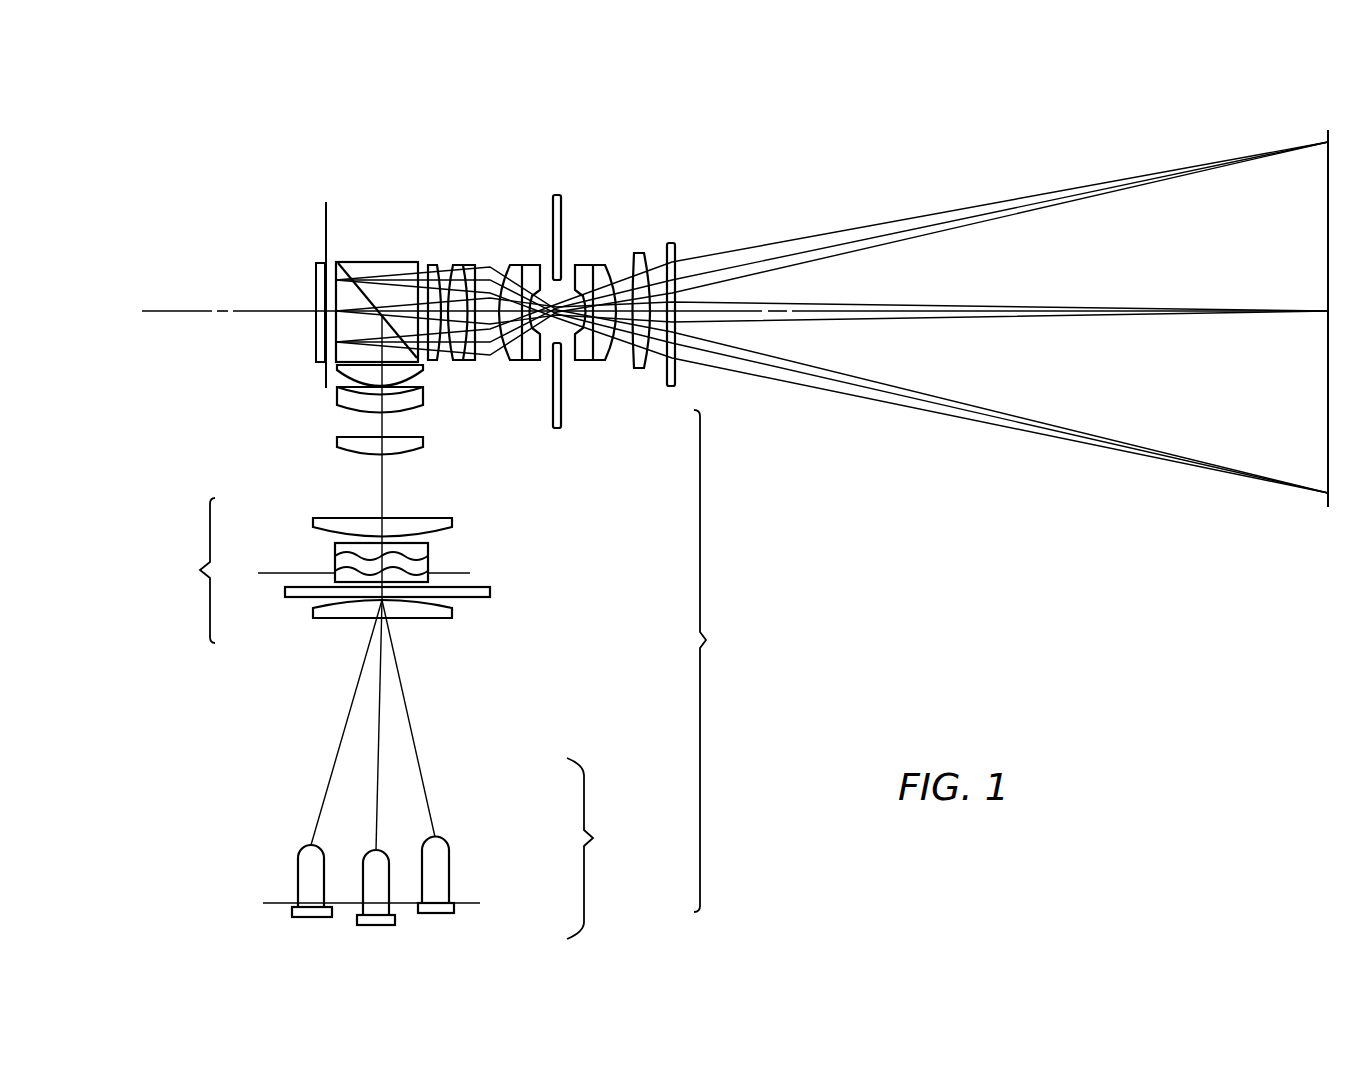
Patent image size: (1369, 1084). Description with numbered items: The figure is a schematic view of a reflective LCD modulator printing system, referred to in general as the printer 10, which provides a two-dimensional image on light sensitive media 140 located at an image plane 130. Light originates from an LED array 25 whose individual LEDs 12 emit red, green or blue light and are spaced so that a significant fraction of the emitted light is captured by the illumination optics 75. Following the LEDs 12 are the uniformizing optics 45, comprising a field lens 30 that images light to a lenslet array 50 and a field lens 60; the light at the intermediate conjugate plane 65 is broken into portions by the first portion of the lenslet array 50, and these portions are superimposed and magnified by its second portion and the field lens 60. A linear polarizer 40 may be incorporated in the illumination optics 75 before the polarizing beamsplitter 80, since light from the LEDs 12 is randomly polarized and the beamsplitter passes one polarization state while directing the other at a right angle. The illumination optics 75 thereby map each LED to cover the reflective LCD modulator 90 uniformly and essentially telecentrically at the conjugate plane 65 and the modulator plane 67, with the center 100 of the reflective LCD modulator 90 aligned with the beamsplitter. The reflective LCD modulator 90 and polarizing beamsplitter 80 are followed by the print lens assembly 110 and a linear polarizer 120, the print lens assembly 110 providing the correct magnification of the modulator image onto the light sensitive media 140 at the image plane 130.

The printer 10 is at (279, 160).
The LEDs 12 is at (470, 856).
The LED array 25 is at (449, 848).
The field lens 30 is at (452, 610).
The linear polarizer 40 is at (300, 598).
The uniformizing optics 45 is at (191, 570).
The lenslet array 50 is at (428, 560).
The field lens 60 is at (342, 518).
The conjugate plane 65 is at (328, 210).
The modulator plane 67 is at (328, 237).
The illumination optics 75 is at (718, 661).
The polarizing beamsplitter 80 is at (392, 262).
The reflective LCD modulator 90 is at (316, 290).
The center of the reflective LCD modulator 100 is at (326, 382).
The print lens assembly 110 is at (651, 432).
The linear polarizer 120 is at (675, 245).
The image plane 130 is at (1328, 385).
The light sensitive media 140 is at (1328, 267).